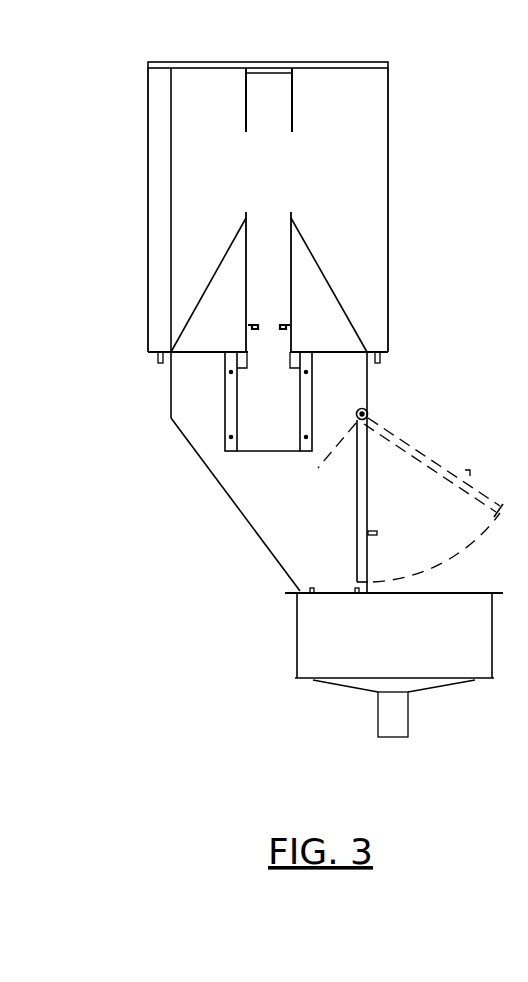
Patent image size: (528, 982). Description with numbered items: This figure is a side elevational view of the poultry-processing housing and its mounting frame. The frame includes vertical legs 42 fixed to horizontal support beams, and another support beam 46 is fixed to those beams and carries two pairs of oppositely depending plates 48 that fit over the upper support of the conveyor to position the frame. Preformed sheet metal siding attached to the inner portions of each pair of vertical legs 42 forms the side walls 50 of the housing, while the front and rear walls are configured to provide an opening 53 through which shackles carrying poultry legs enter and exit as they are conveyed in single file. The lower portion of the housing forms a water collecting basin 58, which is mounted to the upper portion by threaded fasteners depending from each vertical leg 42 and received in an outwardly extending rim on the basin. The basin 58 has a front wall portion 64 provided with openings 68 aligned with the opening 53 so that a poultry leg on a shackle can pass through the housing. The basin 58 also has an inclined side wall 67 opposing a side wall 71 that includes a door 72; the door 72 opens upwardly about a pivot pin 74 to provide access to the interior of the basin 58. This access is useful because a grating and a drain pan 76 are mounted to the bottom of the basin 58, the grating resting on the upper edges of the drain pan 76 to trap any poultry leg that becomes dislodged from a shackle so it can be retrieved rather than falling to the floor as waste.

The vertical legs 42 is at (382, 112).
The support beam 46 is at (268, 67).
The depending plates 48 is at (246, 120).
The side walls 50 is at (223, 302).
The opening 53 is at (265, 245).
The water collecting basin 58 is at (203, 502).
The front wall portion 64 is at (258, 512).
The inclined side wall 67 is at (185, 440).
The openings 68 is at (263, 405).
The side wall 71 is at (367, 375).
The door 72 is at (457, 473).
The pivot pin 74 is at (370, 410).
The drain pan 76 is at (318, 640).